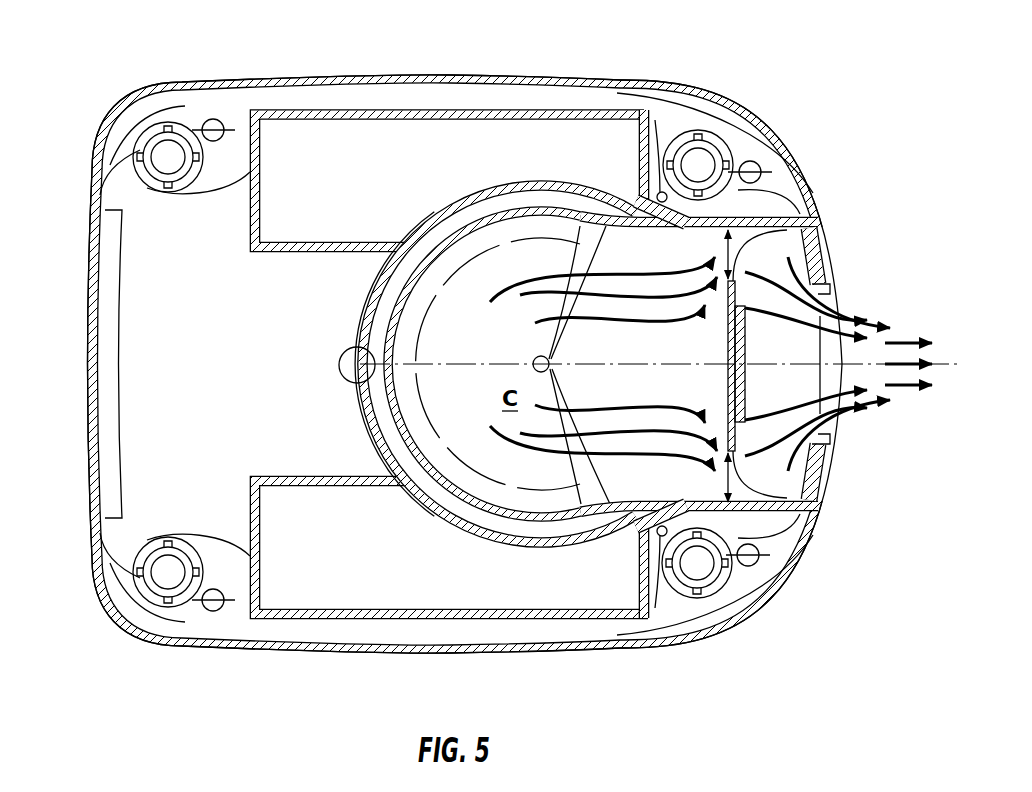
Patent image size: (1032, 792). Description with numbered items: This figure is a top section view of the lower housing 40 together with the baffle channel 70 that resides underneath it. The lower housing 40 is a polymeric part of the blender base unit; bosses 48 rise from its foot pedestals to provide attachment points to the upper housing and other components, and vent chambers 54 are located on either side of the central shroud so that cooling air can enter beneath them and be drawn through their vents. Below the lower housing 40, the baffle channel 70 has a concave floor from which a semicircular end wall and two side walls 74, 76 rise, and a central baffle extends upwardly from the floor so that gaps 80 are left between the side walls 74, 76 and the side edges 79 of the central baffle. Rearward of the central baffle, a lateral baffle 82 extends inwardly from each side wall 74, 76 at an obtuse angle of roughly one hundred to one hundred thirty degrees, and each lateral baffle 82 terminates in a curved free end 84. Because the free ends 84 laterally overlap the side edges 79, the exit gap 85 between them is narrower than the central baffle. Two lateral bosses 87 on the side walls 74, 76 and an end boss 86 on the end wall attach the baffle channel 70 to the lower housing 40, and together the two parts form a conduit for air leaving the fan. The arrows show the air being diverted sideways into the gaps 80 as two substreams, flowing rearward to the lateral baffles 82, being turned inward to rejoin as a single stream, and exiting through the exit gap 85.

The lower housing 40 is at (580, 683).
The bosses 48 is at (172, 153).
The vent chambers 54 is at (395, 125).
The baffle channel 70 is at (850, 455).
The side wall 74 is at (630, 200).
The side wall 76 is at (636, 640).
The side edges 79 is at (808, 220).
The gaps 80 is at (726, 249).
The lateral baffle 82 is at (810, 284).
The curved free end 84 is at (826, 290).
The exit gap 85 is at (822, 355).
The end boss 86 is at (348, 362).
The lateral bosses 87 is at (664, 192).